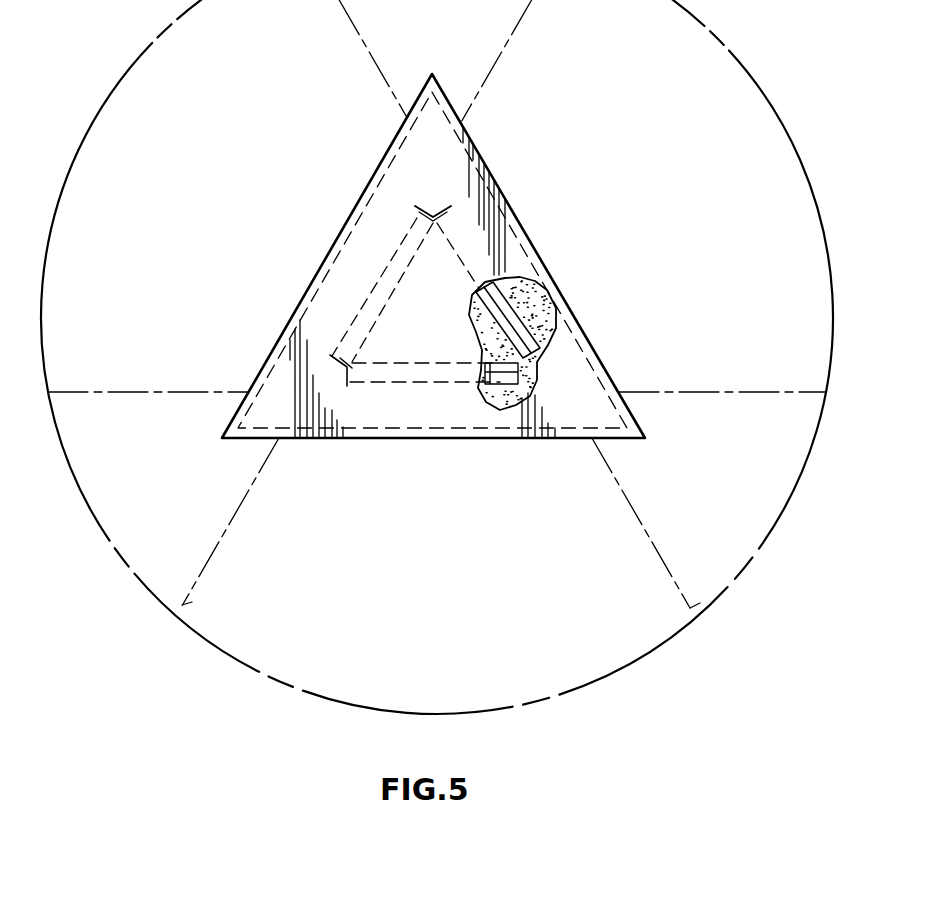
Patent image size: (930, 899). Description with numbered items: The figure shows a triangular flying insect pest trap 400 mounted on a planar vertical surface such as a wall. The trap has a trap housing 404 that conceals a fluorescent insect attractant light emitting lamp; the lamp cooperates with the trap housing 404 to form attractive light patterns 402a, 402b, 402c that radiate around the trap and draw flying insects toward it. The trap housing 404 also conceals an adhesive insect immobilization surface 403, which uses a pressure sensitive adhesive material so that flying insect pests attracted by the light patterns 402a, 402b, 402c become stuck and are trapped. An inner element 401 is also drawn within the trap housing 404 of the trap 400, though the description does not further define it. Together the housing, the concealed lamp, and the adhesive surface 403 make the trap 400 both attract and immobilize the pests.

The triangular flying insect pest trap 400 is at (356, 440).
The inner triangular frame 401 is at (451, 385).
The attractive light pattern 402a is at (645, 621).
The attractive light pattern 402b is at (135, 100).
The attractive light pattern 402c is at (705, 97).
The adhesive insect immobilization surface 403 is at (542, 310).
The trap housing 404 is at (605, 365).